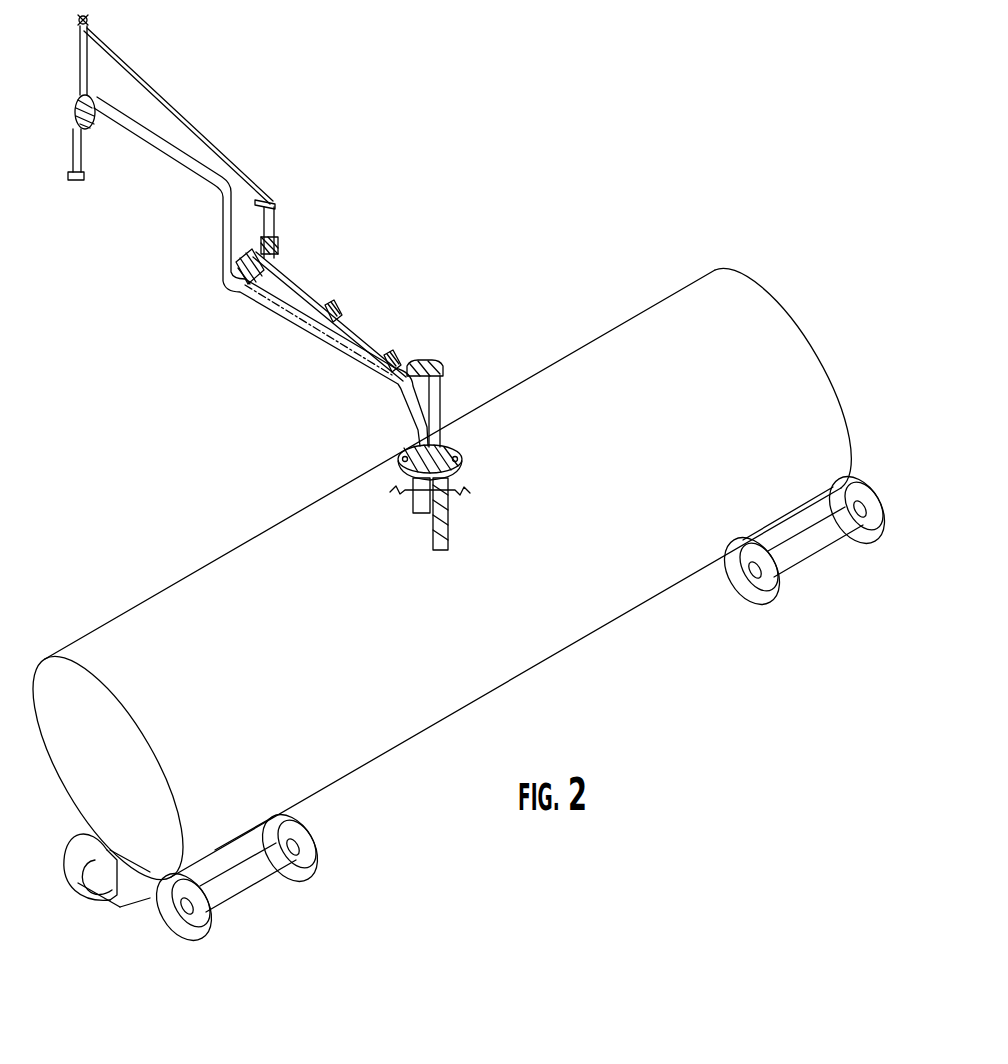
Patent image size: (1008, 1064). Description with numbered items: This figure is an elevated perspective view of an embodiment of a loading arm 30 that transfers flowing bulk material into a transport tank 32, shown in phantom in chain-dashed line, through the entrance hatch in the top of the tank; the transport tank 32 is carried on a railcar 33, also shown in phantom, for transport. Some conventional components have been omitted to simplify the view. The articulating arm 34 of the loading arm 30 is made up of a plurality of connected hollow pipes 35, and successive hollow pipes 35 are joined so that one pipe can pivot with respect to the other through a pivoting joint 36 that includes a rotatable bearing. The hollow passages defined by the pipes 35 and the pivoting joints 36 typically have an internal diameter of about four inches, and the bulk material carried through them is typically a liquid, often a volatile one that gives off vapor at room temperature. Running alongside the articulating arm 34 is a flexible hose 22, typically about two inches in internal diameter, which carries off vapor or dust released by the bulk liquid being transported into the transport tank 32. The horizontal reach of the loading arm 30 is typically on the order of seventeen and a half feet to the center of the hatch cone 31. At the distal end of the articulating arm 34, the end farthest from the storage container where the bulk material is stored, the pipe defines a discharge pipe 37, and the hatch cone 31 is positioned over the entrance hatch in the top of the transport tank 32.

The flexible hose 22 is at (157, 147).
The loading arm 30 is at (362, 108).
The hatch cone 31 is at (458, 437).
The transport tank 32 is at (678, 277).
The railcar 33 is at (142, 912).
The articulating arm 34 is at (357, 277).
The hollow pipes 35 is at (147, 117).
The pivoting joint 36 is at (73, 110).
The discharge pipe 37 is at (445, 400).